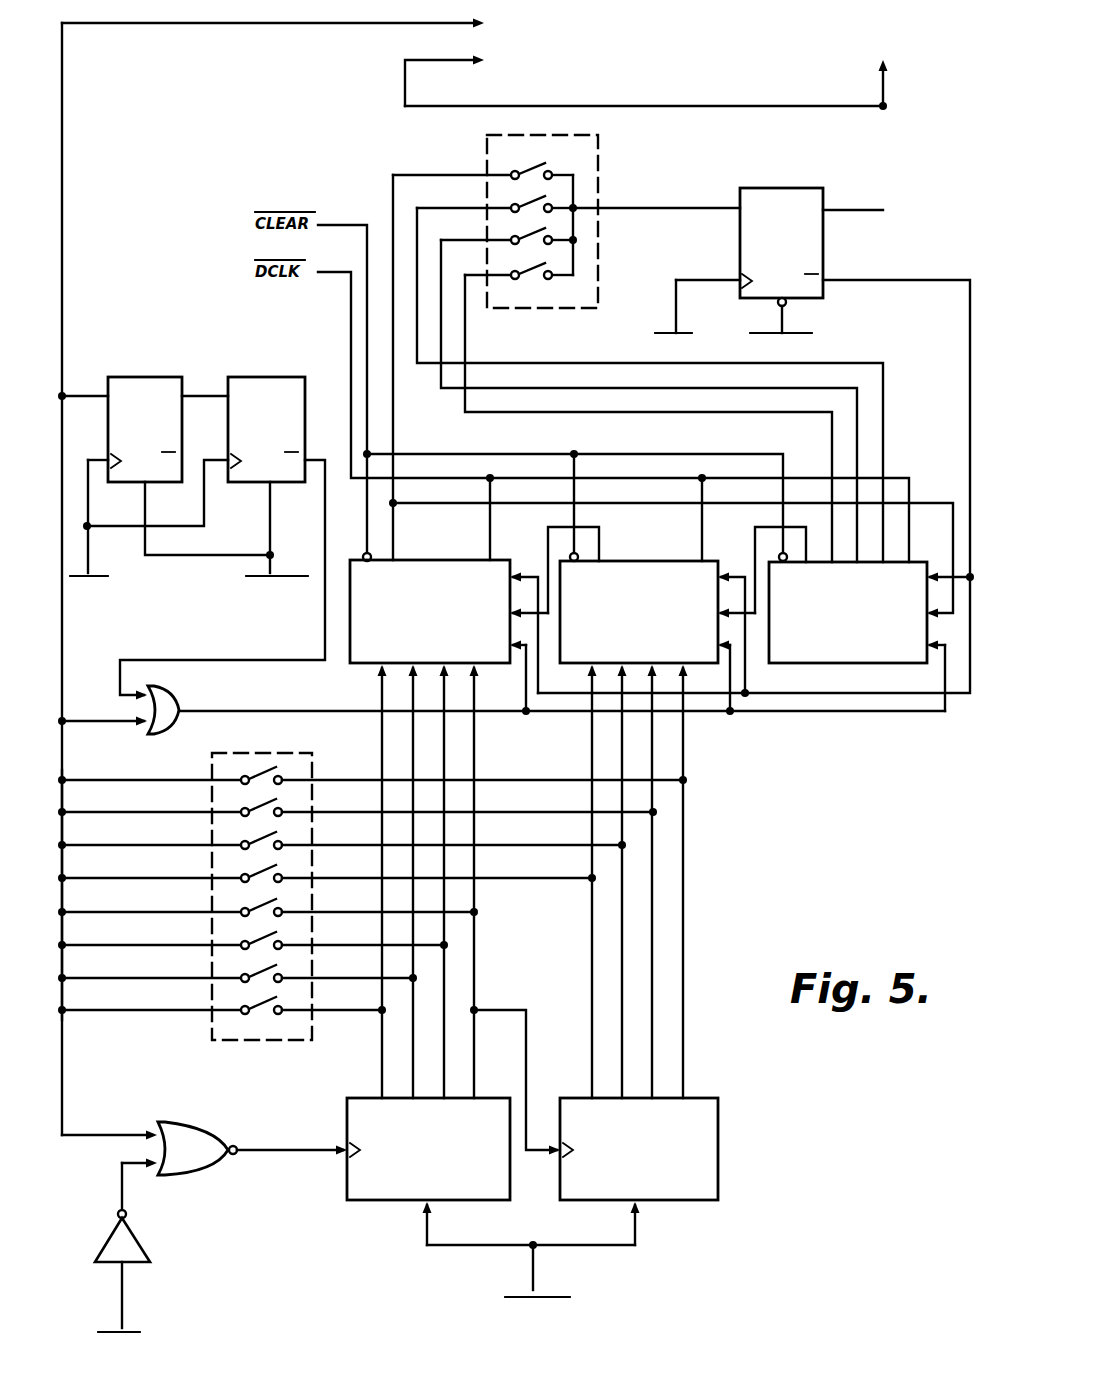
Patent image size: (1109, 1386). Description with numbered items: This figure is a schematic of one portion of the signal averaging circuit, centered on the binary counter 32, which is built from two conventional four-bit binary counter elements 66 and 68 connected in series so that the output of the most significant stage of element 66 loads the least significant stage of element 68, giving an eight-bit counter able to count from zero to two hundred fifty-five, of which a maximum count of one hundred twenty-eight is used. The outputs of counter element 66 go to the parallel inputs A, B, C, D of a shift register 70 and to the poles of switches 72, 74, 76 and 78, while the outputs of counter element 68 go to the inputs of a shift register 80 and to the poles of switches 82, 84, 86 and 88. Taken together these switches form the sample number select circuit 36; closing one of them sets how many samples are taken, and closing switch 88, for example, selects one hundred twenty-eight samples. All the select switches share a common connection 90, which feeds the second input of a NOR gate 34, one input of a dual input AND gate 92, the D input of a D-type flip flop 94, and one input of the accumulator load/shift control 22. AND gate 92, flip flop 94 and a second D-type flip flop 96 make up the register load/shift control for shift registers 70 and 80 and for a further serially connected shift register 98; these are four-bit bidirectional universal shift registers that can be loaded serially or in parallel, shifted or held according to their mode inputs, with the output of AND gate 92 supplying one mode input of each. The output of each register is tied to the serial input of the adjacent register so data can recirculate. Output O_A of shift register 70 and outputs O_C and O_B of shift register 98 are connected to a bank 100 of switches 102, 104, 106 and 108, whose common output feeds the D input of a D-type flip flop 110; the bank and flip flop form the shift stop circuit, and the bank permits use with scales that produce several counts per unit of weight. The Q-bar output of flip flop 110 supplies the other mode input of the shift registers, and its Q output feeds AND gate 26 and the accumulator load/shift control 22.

The accumulator load/shift control 22 is at (394, 63).
The AND gate 26 is at (683, 78).
The binary counter 32 is at (547, 1238).
The NOR gate 34 is at (205, 1175).
The sample number select circuit 36 is at (290, 752).
The binary counter element 66 is at (370, 1200).
The binary counter element 68 is at (688, 1200).
The shift register 70 is at (430, 560).
The switch 72 is at (254, 1004).
The switch 74 is at (254, 972).
The switch 76 is at (254, 939).
The switch 78 is at (254, 906).
The shift register 80 is at (640, 561).
The switch 82 is at (254, 872).
The switch 84 is at (254, 839).
The switch 86 is at (254, 806).
The switch 88 is at (254, 774).
The common connection 90 is at (62, 878).
The AND gate 92 is at (179, 700).
The D-type flip flop 94 is at (145, 377).
The second D-type flip flop 96 is at (272, 377).
The shift register 98 is at (808, 668).
The switch bank 100 is at (598, 150).
The switch 102 is at (535, 167).
The switch 104 is at (535, 200).
The switch 106 is at (535, 232).
The switch 108 is at (535, 267).
The D-type flip flop 110 is at (788, 188).